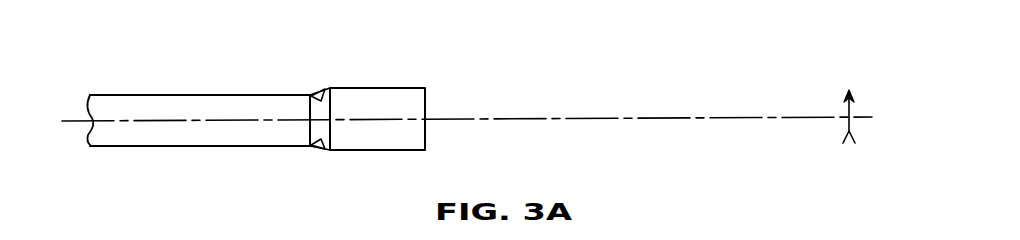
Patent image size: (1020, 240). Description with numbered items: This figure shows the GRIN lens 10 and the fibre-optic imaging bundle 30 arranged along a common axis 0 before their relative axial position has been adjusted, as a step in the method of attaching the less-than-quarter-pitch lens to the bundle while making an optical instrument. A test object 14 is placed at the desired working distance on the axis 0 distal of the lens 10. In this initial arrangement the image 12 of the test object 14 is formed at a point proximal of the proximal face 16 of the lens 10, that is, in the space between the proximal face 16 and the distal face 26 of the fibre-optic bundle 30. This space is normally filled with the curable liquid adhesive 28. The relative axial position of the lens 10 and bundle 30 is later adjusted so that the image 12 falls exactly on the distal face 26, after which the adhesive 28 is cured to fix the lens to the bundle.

The longitudinal axis 0 is at (655, 118).
The GRIN lens 10 is at (417, 88).
The image 12 is at (340, 90).
The test object 14 is at (853, 93).
The proximal face 16 is at (323, 150).
The distal face 26 is at (313, 95).
The curable liquid adhesive 28 is at (311, 148).
The fibre-optic imaging bundle 30 is at (161, 95).